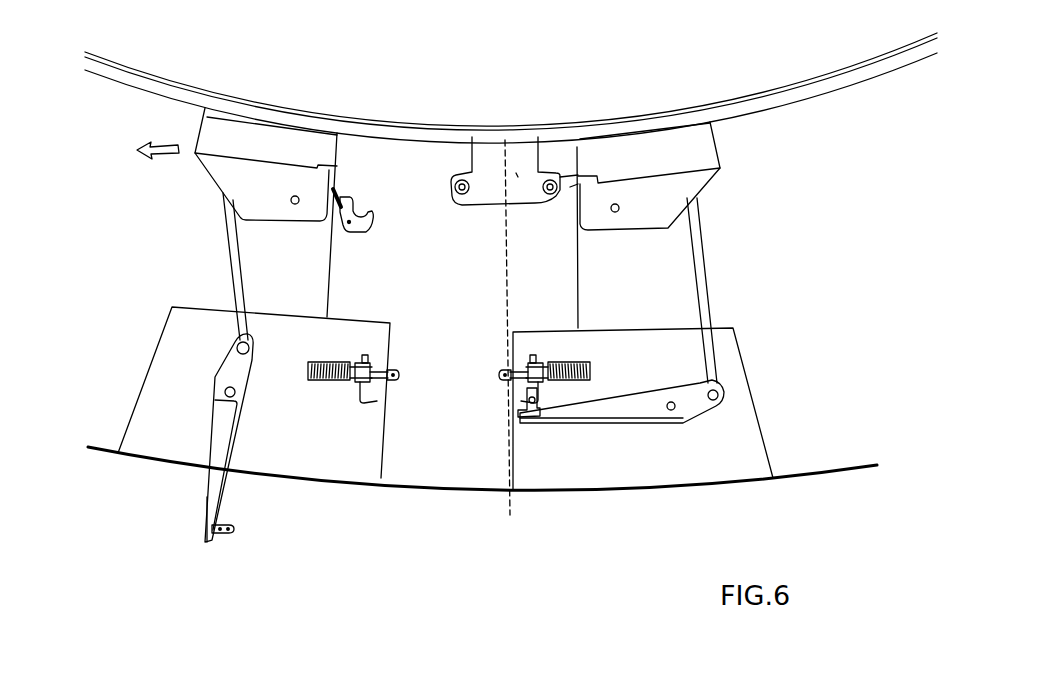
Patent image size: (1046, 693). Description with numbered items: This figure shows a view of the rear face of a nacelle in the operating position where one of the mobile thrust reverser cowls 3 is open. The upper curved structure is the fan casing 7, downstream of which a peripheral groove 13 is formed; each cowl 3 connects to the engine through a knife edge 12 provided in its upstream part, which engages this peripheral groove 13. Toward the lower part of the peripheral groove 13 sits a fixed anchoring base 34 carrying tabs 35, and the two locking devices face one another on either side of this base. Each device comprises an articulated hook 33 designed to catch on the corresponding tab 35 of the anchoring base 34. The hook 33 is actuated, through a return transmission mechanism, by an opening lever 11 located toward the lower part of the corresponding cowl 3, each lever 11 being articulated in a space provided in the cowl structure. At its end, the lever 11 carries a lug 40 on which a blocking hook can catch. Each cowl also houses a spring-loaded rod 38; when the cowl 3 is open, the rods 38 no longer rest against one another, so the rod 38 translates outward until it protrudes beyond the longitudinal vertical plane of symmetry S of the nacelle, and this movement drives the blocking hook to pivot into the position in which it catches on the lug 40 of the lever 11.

The mobile thrust reverser cowl 3 is at (130, 470).
The fan casing 7 is at (433, 125).
The opening lever 11 is at (202, 513).
The knife edge 12 is at (233, 118).
The peripheral groove 13 is at (131, 82).
The articulated hook 33 is at (350, 226).
The fixed anchoring base 34 is at (493, 233).
The tab 35 is at (452, 175).
The rod 38 is at (395, 388).
The lug 40 is at (225, 540).
The longitudinal vertical plane of symmetry S is at (508, 505).